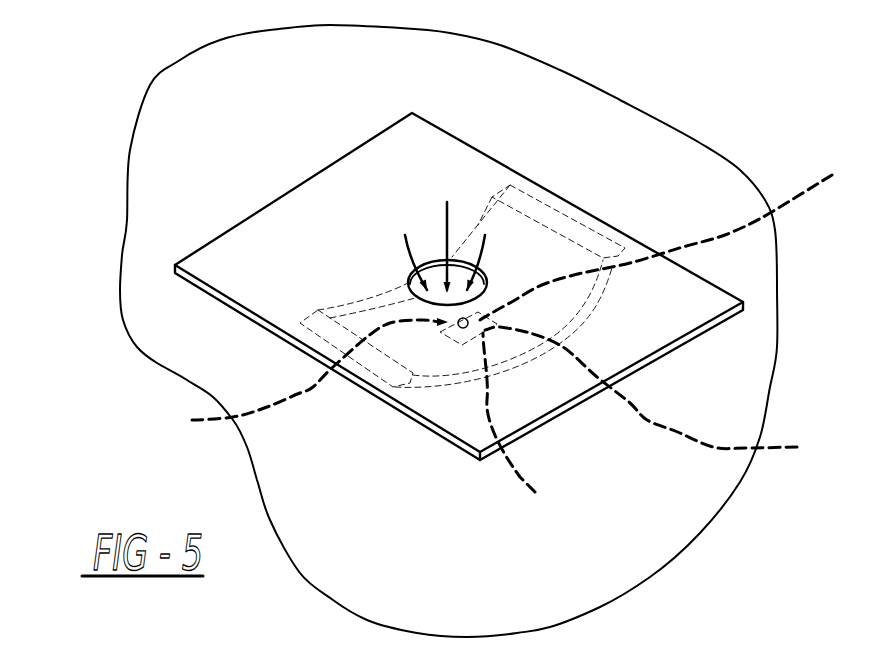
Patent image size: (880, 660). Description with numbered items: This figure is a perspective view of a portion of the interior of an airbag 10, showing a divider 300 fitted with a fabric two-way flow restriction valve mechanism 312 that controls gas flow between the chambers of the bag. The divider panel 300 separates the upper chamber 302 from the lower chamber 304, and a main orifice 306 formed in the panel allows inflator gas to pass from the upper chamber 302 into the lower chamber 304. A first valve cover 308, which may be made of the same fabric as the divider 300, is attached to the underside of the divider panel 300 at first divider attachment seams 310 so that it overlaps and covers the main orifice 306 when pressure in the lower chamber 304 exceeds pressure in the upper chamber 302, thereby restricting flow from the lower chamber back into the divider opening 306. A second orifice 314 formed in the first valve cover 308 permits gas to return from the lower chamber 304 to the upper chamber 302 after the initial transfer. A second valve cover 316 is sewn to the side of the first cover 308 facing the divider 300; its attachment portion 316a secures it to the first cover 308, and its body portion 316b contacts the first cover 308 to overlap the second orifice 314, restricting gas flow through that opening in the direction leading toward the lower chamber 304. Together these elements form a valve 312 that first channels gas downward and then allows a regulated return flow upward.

The airbag / article 10 is at (648, 148).
The divider 300 is at (697, 297).
The upper chamber 302 is at (245, 70).
The lower chamber 304 is at (607, 537).
The main orifice 306 is at (431, 266).
The first valve cover 308 is at (380, 297).
The first divider attachment seams 310 is at (533, 217).
The two-way flow restriction valve mechanism 312 is at (558, 297).
The second orifice 314 is at (324, 374).
The second valve cover 316 is at (673, 237).
The attachment portion 316a is at (670, 396).
The body portion 316b is at (533, 427).